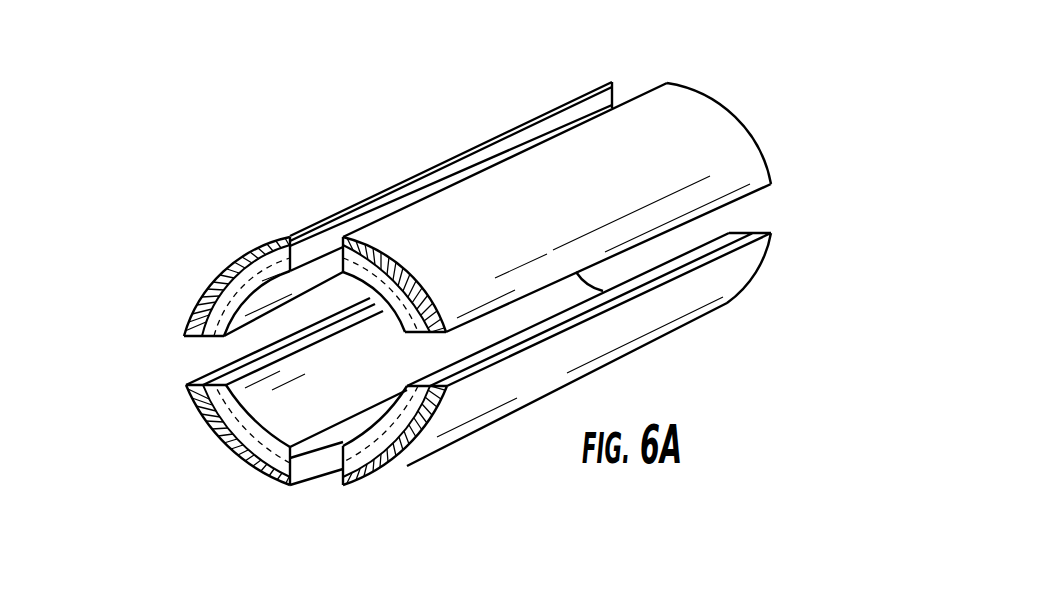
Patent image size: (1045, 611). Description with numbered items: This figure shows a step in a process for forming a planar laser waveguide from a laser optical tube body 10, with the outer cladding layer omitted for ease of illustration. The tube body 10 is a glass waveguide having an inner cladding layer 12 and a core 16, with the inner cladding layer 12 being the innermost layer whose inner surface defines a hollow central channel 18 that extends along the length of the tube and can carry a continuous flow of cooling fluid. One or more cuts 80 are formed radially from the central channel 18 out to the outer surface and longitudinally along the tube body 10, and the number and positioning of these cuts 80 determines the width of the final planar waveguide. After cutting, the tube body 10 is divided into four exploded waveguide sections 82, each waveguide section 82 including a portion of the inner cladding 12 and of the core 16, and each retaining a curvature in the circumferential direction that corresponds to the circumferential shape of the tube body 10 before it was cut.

The laser optical tube body 10 is at (741, 62).
The inner cladding layer 12 is at (238, 432).
The core 16 is at (246, 443).
The central channel 18 is at (301, 413).
The cuts 80 is at (636, 83).
The waveguide section 82 is at (772, 120).